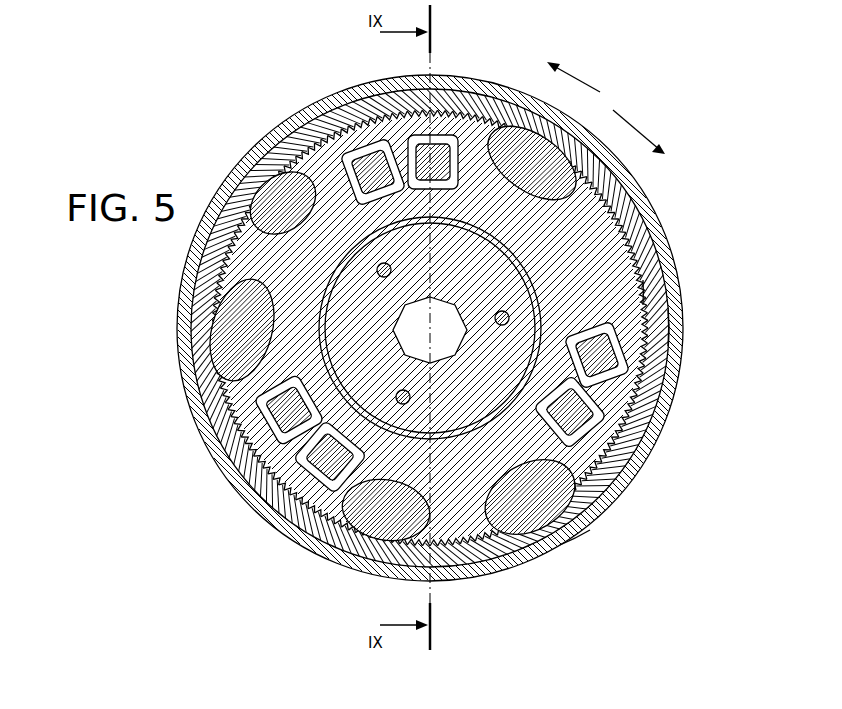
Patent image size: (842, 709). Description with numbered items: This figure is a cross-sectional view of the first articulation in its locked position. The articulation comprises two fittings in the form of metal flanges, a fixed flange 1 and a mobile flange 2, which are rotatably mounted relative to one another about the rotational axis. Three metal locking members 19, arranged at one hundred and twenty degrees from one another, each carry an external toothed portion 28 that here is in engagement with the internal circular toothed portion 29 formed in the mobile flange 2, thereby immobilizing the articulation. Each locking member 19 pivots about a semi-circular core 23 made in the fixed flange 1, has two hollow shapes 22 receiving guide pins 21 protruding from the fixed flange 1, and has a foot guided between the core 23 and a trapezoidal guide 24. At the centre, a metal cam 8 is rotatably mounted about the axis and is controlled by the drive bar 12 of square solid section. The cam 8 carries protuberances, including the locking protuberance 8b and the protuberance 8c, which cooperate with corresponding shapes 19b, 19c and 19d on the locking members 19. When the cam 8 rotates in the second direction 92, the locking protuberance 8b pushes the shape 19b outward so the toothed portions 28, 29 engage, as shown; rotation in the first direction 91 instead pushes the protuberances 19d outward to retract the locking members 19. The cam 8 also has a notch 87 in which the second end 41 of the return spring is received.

The fixed flange 1 is at (210, 456).
The mobile flange 2 is at (207, 416).
The cam 8 is at (575, 288).
The locking protuberance 8b is at (395, 222).
The protuberance 8c is at (350, 258).
The drive bar 12 is at (433, 330).
The locking member 19 is at (600, 393).
The protuberance 19b is at (300, 167).
The shape 19c is at (372, 118).
The protuberance 19d is at (532, 262).
The guide pin 21 is at (305, 470).
The hollow shape 22 is at (318, 465).
The core 23 is at (507, 510).
The guide 24 is at (380, 517).
The external toothed portion 28 is at (668, 345).
The internal circular toothed portion 29 is at (643, 305).
The second end of the spring 41 is at (560, 542).
The notch 87 is at (590, 423).
The first direction 91 is at (575, 76).
The second direction 92 is at (639, 128).